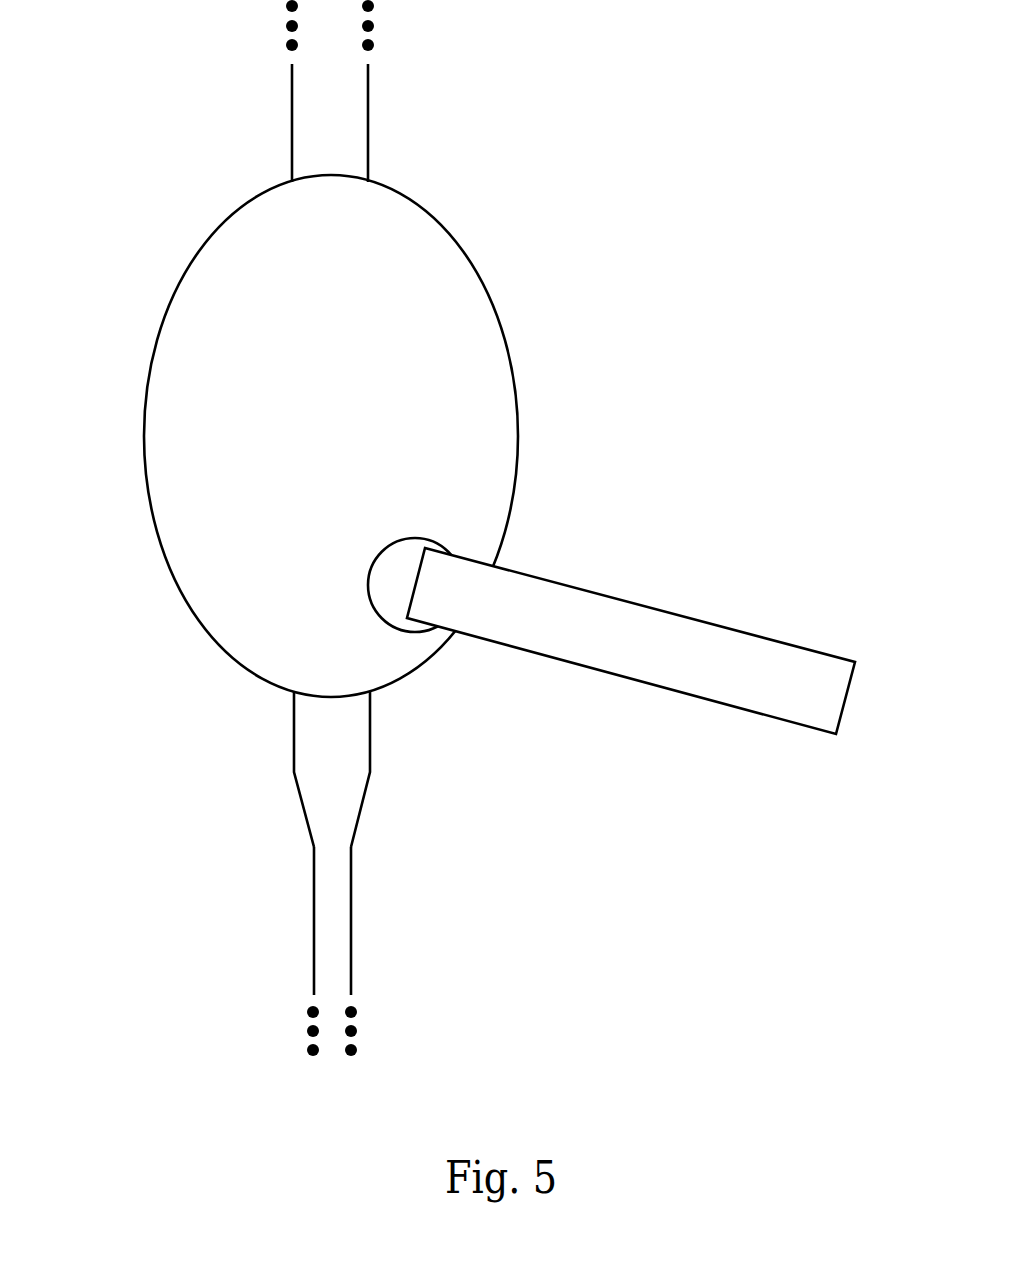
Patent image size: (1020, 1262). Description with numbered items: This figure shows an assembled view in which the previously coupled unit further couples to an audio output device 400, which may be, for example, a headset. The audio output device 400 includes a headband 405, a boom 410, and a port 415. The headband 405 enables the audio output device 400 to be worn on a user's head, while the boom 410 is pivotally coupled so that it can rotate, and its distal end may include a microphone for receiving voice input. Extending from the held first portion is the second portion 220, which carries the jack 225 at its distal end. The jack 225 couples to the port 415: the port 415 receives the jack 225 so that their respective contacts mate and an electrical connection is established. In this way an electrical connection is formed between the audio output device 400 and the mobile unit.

The audio output device 400 is at (144, 438).
The headband 405 is at (292, 119).
The boom 410 is at (630, 640).
The port 415 is at (332, 693).
The jack 225 is at (294, 735).
The second portion 220 is at (313, 938).